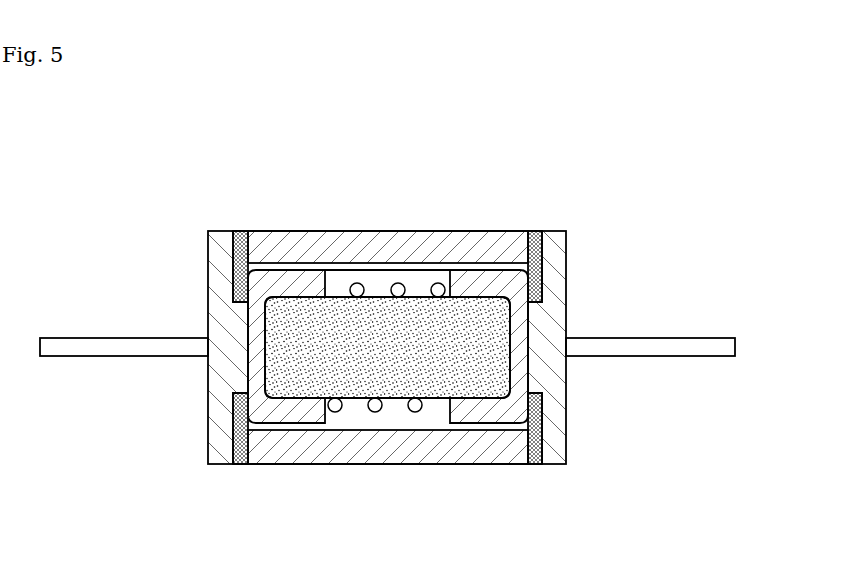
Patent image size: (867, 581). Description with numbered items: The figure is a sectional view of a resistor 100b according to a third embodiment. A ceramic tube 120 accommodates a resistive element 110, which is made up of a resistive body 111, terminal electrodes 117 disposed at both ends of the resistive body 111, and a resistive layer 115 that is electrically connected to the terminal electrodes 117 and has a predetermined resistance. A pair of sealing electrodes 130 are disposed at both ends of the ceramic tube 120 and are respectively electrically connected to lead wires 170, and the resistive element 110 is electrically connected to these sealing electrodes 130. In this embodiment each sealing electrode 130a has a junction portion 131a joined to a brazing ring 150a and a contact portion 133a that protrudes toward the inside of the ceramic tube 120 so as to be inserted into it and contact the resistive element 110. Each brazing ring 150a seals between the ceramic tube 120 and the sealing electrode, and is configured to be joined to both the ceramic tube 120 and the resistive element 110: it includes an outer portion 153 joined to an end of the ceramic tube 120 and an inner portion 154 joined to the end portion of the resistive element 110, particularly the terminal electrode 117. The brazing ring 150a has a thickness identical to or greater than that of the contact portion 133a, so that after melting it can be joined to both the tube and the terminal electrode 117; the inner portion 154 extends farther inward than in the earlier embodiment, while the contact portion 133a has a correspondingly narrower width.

The resistor 100b is at (153, 108).
The resistive element 110 is at (488, 527).
The resistive body 111 is at (322, 338).
The resistive layer 115 is at (407, 402).
The terminal electrode 117 is at (460, 412).
The ceramic tube 120 is at (324, 231).
The sealing electrode 130 is at (550, 320).
The sealing electrode 130a is at (125, 395).
The junction portion 131a is at (238, 434).
The contact portion 133a is at (238, 393).
The brazing ring 150a is at (136, 227).
The outer portion 153 is at (232, 256).
The inner portion 154 is at (240, 305).
The lead wire 170 is at (670, 345).